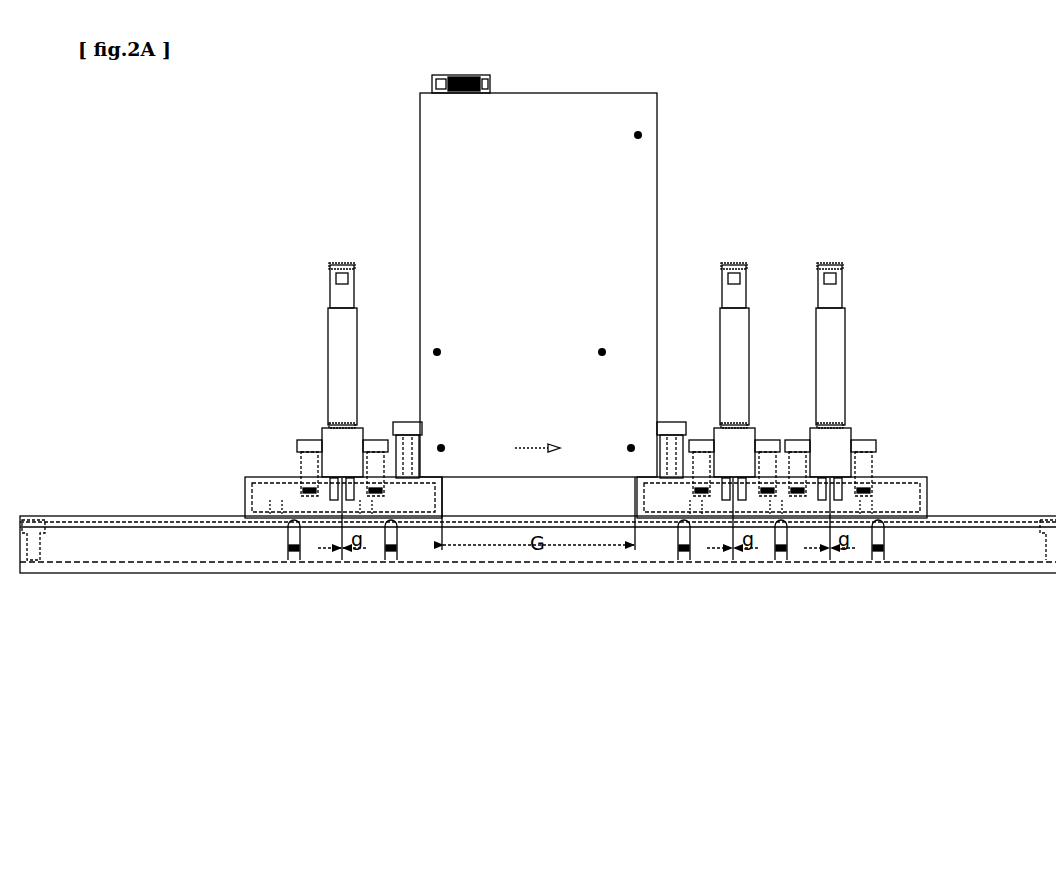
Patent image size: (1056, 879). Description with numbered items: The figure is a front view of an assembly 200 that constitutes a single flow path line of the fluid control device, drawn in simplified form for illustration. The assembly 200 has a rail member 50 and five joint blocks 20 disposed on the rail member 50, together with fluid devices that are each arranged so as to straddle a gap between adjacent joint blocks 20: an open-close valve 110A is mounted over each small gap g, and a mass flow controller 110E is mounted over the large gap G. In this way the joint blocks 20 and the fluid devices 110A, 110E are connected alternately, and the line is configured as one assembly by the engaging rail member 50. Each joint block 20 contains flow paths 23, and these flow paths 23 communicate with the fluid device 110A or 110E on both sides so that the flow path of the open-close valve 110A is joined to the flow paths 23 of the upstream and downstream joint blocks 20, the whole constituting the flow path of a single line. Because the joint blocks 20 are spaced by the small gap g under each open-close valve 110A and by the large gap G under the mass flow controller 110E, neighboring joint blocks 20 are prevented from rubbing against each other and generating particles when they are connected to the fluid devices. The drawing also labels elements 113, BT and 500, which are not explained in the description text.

The assembly 200 is at (675, 91).
The mass flow controller 110E is at (538, 92).
The open-close valve 110A is at (331, 263).
The mounting block 113 is at (333, 440).
The bolt BT is at (298, 440).
The joint block 20 is at (245, 485).
The rail member 50 is at (200, 545).
The flow path 23 is at (275, 524).
The guide pin 500 is at (300, 555).